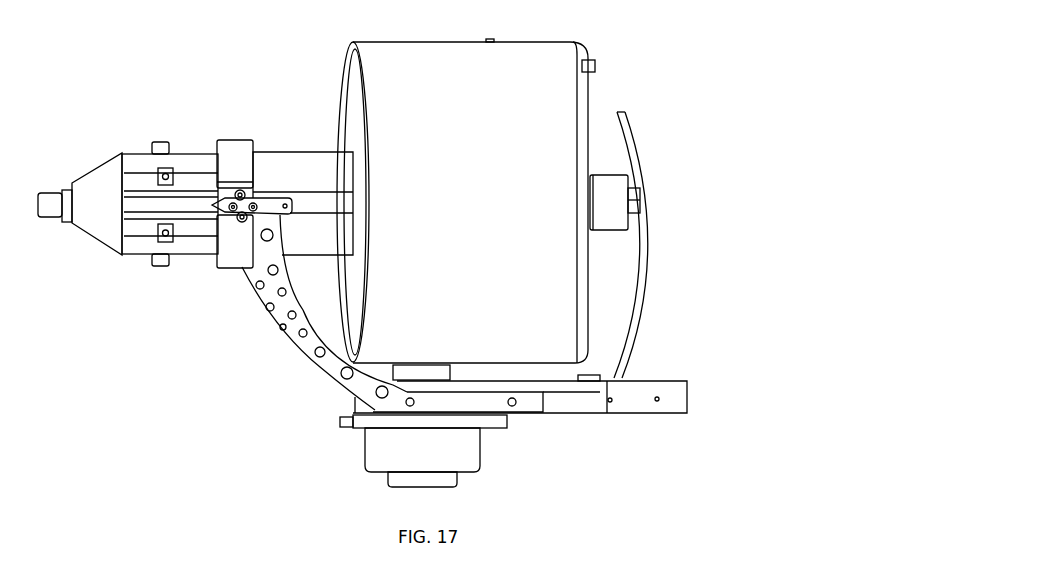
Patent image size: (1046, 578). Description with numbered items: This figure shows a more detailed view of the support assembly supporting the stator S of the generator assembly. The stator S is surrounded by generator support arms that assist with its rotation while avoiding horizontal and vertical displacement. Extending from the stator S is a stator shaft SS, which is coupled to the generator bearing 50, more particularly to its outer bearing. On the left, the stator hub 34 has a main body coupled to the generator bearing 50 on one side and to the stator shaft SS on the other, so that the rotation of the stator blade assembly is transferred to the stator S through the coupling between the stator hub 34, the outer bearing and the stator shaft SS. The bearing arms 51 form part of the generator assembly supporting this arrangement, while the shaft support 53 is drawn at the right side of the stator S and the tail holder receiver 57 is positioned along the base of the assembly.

The stator hub 34 is at (132, 255).
The generator bearing 50 is at (232, 140).
The stator shaft SS is at (290, 160).
The stator S is at (461, 194).
The shaft support 53 is at (641, 140).
The bearing arms 51 is at (261, 300).
The tail holder receiver 57 is at (657, 395).